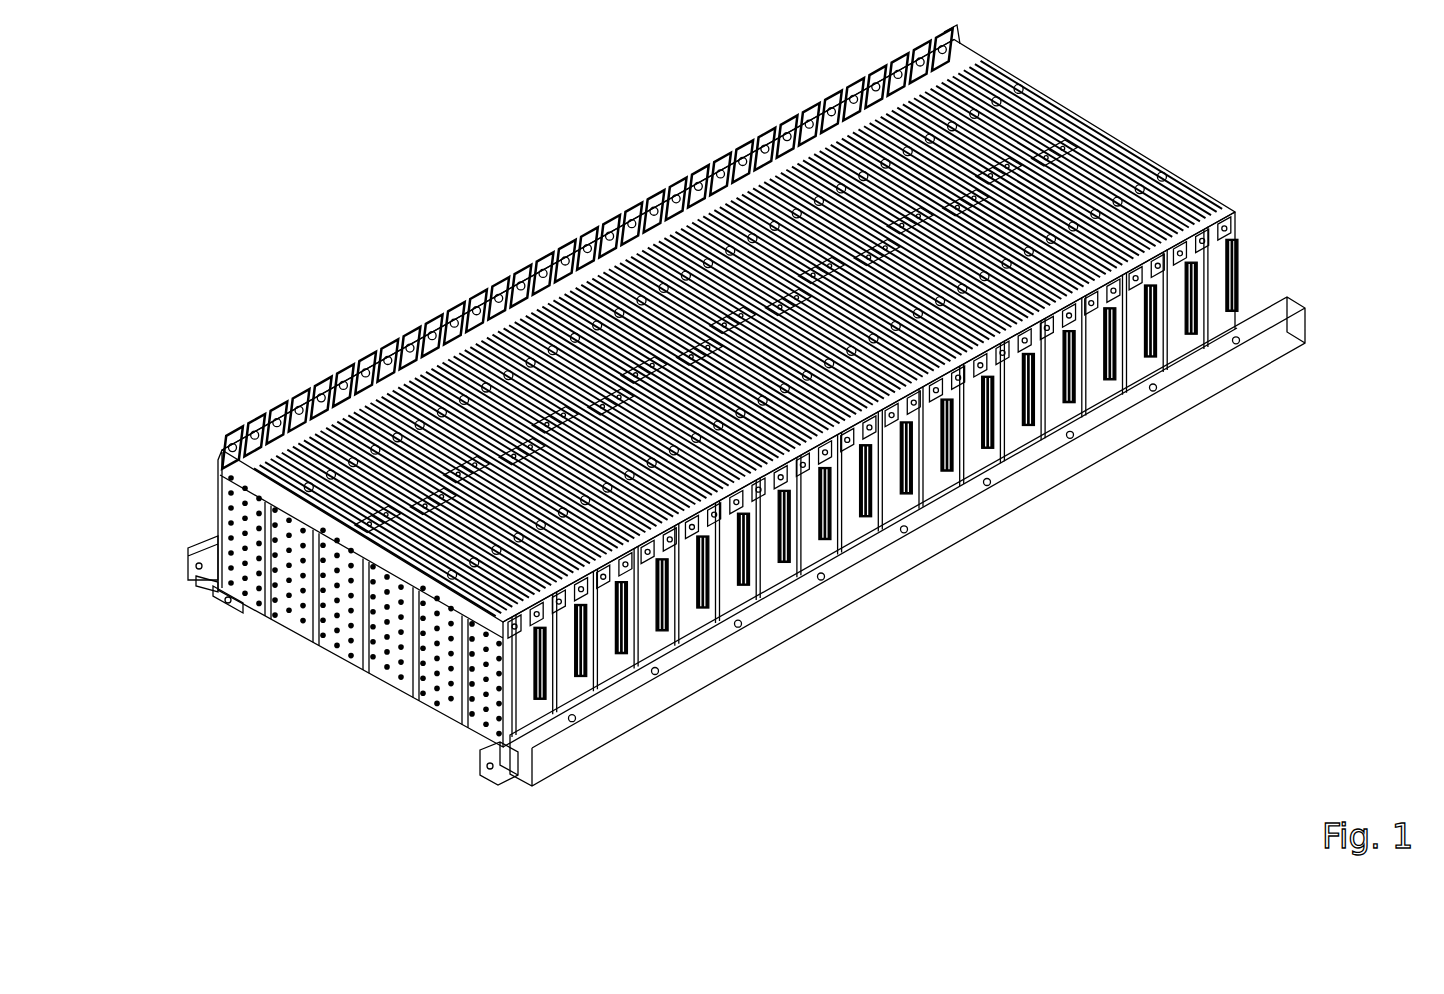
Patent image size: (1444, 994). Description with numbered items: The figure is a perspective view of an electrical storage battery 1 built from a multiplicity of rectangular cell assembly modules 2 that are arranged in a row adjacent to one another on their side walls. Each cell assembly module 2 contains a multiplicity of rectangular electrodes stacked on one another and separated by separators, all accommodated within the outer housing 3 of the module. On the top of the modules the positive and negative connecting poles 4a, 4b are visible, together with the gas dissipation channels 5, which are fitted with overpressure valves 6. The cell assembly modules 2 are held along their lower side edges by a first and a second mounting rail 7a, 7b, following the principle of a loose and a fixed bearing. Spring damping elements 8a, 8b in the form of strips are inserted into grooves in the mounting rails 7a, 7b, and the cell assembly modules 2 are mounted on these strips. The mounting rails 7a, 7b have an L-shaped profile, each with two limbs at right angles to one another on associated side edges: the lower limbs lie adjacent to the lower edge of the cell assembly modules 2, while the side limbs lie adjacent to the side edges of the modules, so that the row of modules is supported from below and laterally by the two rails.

The electrical storage battery 1 is at (334, 172).
The cell assembly module 2 is at (297, 640).
The outer housing 3 is at (473, 729).
The positive connecting pole 4a is at (766, 140).
The negative connecting pole 4b is at (1240, 213).
The gas dissipation channel 5 is at (1040, 103).
The overpressure valve 6 is at (1098, 133).
The first mounting rail 7a is at (206, 540).
The second mounting rail 7b is at (910, 565).
The spring damping element 8a is at (209, 605).
The spring damping element 8b is at (188, 586).